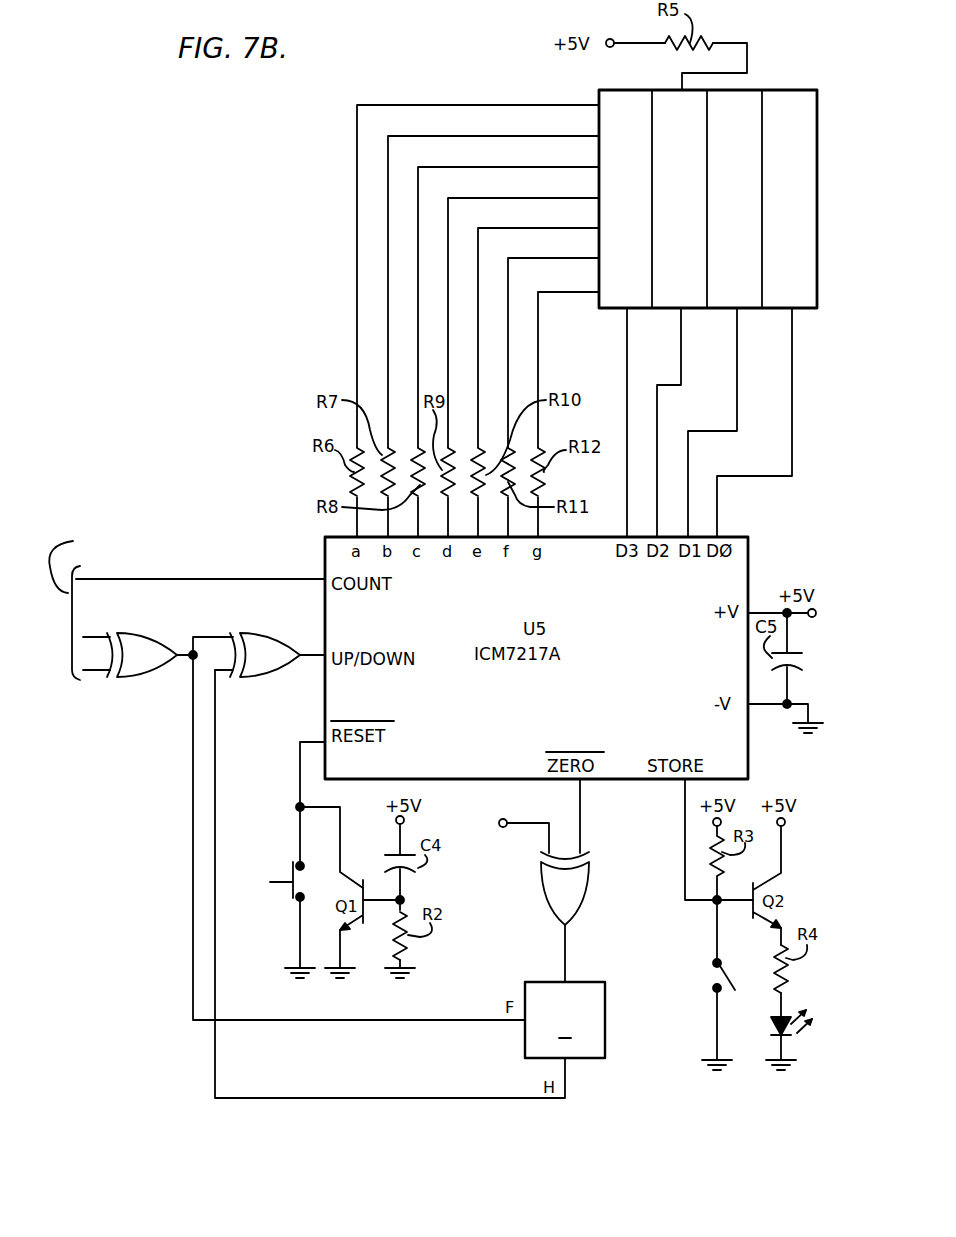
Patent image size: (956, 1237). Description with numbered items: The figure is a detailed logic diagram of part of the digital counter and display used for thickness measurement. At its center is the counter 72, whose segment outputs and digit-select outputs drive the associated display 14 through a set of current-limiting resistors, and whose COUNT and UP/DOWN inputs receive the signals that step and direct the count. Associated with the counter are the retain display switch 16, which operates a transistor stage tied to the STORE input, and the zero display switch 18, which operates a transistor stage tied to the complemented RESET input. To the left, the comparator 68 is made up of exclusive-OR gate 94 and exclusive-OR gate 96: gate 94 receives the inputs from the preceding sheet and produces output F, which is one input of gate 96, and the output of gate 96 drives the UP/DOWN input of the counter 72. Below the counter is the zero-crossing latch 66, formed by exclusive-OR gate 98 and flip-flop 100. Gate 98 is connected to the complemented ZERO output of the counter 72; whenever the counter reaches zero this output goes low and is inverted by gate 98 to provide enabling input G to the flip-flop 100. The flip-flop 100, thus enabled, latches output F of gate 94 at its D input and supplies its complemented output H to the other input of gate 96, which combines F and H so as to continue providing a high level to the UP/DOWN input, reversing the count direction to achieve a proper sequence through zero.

The display 14 is at (777, 90).
The retain display switch 16 is at (735, 972).
The zero display switch 18 is at (268, 883).
The zero-crossing latch 66 is at (522, 948).
The comparator 68 is at (165, 720).
The counter 72 is at (635, 783).
The exclusive-OR gate 94 is at (155, 633).
The exclusive-OR gate 96 is at (277, 633).
The exclusive-OR gate 98 is at (580, 900).
The flip-flop 100 is at (583, 1060).